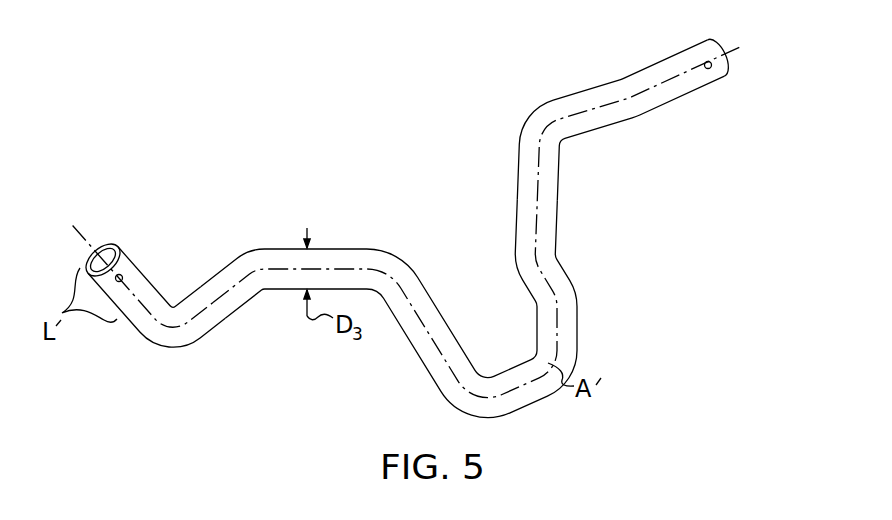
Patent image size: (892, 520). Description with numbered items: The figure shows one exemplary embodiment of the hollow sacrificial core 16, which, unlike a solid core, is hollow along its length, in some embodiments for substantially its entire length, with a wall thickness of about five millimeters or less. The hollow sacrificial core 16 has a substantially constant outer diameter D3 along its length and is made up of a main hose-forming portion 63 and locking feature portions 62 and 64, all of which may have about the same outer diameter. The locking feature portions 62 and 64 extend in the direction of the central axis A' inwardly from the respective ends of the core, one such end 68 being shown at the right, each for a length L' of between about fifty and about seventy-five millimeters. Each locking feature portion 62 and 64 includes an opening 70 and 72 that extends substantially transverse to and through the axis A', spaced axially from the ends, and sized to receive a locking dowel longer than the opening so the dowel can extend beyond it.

The hollow sacrificial core 16 is at (432, 214).
The locking feature portion 62 is at (149, 243).
The hose-forming portion 63 is at (392, 234).
The locking feature portion 64 is at (653, 106).
The end 68 is at (729, 55).
The opening 70 is at (117, 229).
The opening 72 is at (703, 40).